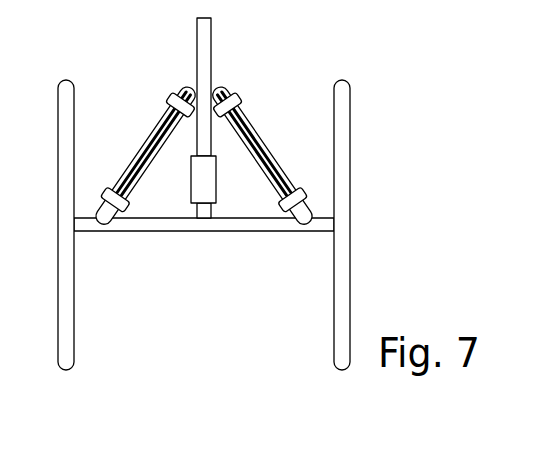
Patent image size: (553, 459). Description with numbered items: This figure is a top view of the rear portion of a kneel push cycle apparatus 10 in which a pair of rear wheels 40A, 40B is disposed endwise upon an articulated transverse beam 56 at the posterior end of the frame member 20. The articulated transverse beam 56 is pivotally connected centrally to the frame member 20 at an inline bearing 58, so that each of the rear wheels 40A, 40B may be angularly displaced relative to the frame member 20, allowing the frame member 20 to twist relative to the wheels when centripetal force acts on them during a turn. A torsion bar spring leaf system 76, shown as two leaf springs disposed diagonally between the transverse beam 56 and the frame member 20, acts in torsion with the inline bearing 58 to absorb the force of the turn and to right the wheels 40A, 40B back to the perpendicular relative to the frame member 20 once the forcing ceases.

The kneel push cycle apparatus 10 is at (398, 78).
The frame member 20 is at (203, 38).
The rear wheel 40A is at (65, 113).
The rear wheel 40B is at (342, 173).
The articulated transverse beam 56 is at (150, 232).
The inline bearing 58 is at (208, 183).
The torsion bar spring leaf system 76 is at (166, 138).